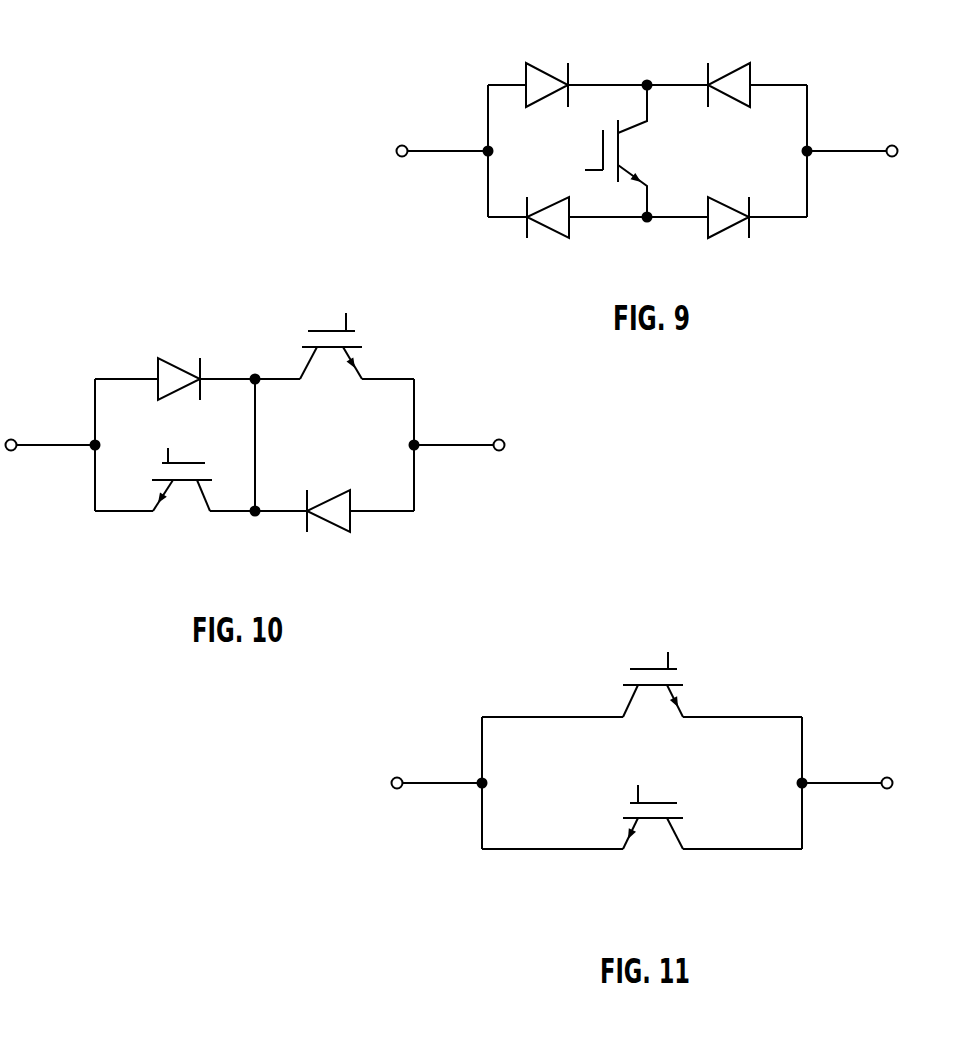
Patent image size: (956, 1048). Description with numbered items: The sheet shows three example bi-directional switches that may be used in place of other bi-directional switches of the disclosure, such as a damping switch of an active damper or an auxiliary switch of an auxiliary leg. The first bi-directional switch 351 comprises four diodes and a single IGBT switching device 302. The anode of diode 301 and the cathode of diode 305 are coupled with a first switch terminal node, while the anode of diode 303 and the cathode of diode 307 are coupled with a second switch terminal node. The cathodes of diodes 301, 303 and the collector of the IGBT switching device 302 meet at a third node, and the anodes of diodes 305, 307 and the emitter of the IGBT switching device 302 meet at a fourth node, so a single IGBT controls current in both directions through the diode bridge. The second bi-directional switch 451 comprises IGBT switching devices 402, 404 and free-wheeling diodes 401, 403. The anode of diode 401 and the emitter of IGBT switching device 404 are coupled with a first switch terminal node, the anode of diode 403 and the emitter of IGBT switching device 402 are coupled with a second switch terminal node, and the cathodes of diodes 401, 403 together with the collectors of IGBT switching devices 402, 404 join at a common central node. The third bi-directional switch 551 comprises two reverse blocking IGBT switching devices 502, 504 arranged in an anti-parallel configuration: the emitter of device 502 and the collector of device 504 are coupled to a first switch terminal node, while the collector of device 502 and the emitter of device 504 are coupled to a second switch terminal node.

In FIG. 9, the bi-directional switch 351 is at (505, 44).
In FIG. 9, the diode 301 is at (546, 70).
In FIG. 9, the IGBT switching device 302 is at (618, 160).
In FIG. 9, the diode 303 is at (735, 70).
In FIG. 9, the diode 305 is at (553, 237).
In FIG. 9, the diode 307 is at (722, 237).
In FIG. 10, the bi-directional switch 451 is at (111, 264).
In FIG. 10, the free-wheeling diode 401 is at (175, 363).
In FIG. 10, the IGBT switching device 402 is at (330, 330).
In FIG. 10, the free-wheeling diode 403 is at (340, 532).
In FIG. 10, the IGBT switching device 404 is at (178, 483).
In FIG. 11, the bi-directional switch 551 is at (533, 642).
In FIG. 11, the reverse blocking IGBT switching device 502 is at (647, 668).
In FIG. 11, the reverse blocking IGBT switching device 504 is at (651, 803).